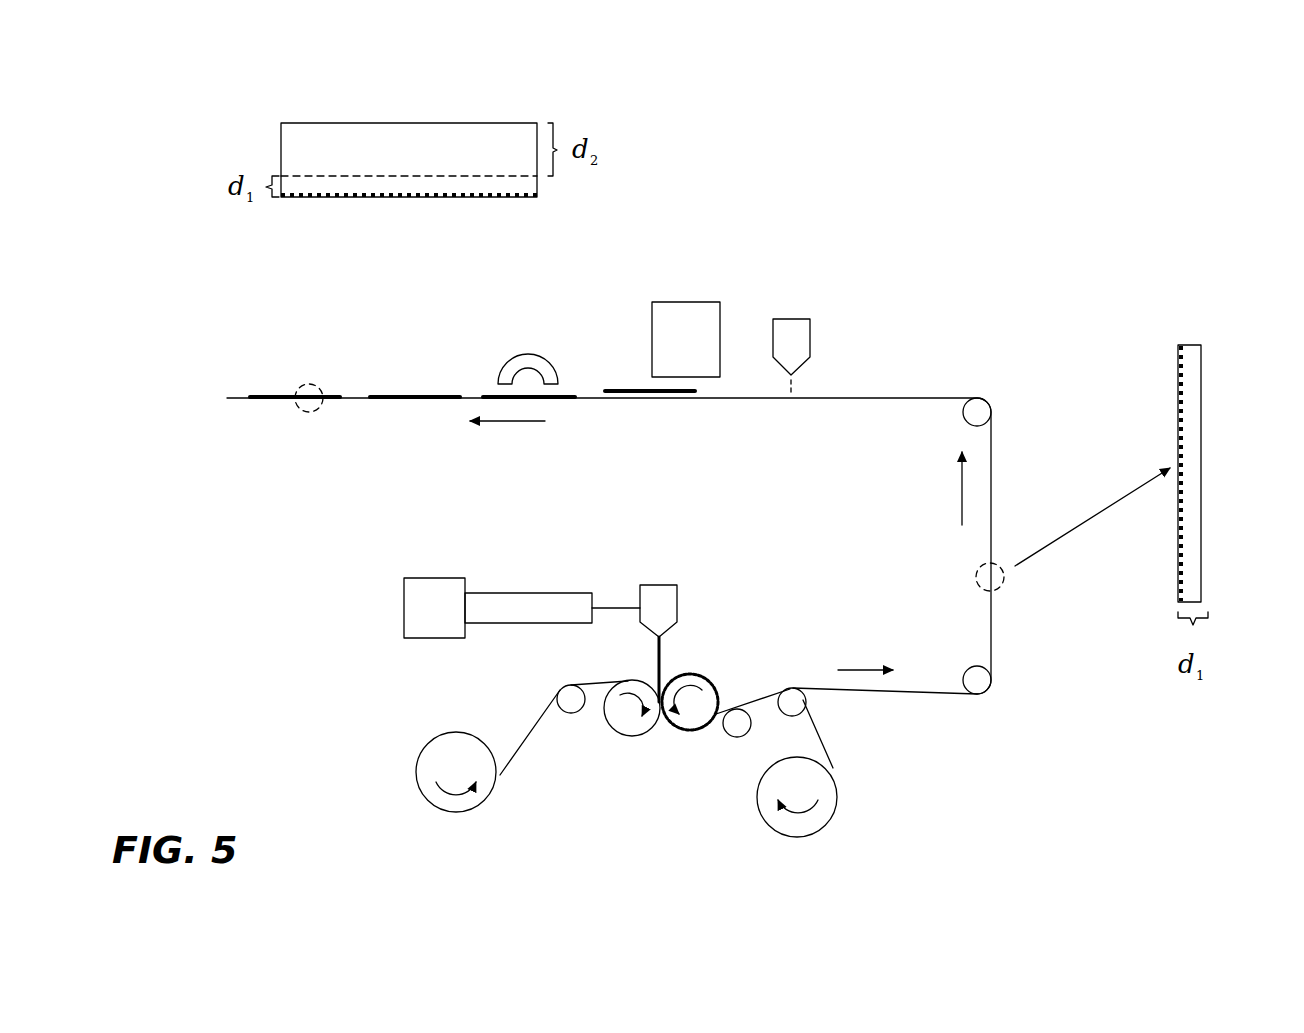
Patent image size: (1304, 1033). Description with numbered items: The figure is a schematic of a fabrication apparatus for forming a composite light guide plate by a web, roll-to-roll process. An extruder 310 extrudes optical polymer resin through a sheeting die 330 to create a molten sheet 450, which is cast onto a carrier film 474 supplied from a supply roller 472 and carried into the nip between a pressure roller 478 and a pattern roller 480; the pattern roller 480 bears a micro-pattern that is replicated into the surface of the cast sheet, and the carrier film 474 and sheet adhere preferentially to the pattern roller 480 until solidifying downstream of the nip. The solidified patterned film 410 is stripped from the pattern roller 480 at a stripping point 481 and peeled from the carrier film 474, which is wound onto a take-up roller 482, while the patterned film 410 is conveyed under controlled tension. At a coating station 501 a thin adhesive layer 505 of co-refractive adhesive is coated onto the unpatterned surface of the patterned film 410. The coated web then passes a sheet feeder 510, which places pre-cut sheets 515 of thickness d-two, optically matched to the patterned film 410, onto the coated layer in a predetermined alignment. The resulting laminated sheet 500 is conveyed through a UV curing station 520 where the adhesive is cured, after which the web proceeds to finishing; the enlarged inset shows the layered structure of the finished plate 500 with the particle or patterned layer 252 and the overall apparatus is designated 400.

The laminated sheet 500 is at (372, 212).
The adhesive layer 505 is at (410, 177).
The pre-cut sheet 515 is at (468, 133).
The abrasive particle layer 252 is at (468, 198).
The patterned film 410 is at (530, 182).
The UV curing station 520 is at (537, 349).
The sheet feeder 510 is at (700, 300).
The coating station 501 is at (795, 318).
The manufacturing system 400 is at (313, 526).
The extruder 310 is at (573, 593).
The sheeting die 330 is at (660, 582).
The molten sheet 450 is at (655, 668).
The supply roller 472 is at (438, 737).
The carrier film 474 is at (527, 737).
The pressure roller 478 is at (632, 740).
The pattern roller 480 is at (683, 672).
The stripping point 481 is at (712, 728).
The take-up roller 482 is at (770, 830).